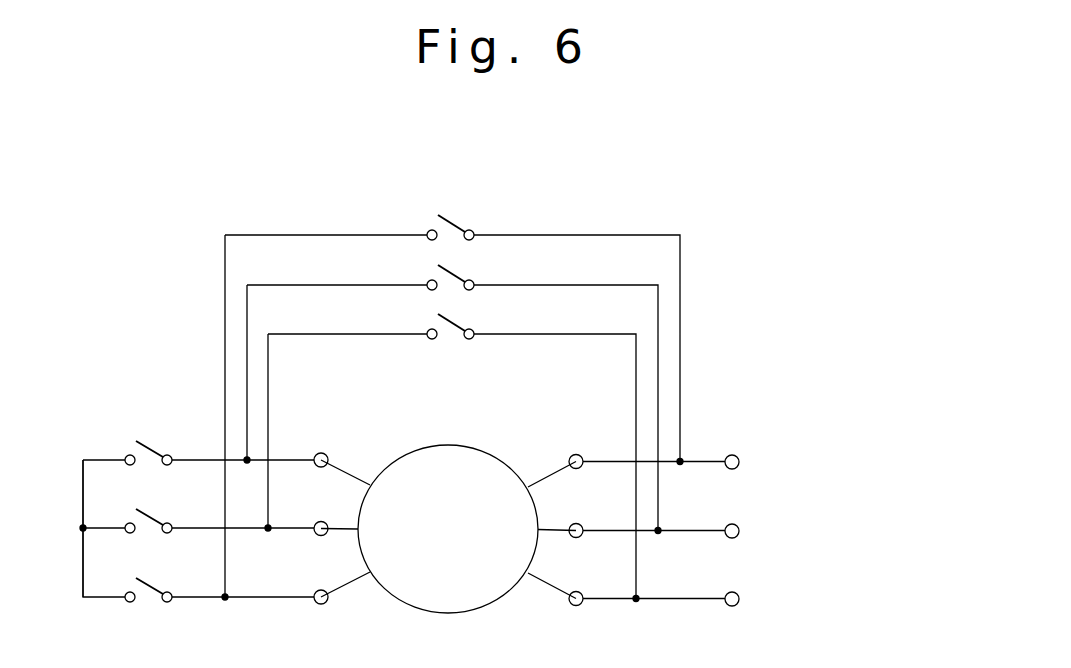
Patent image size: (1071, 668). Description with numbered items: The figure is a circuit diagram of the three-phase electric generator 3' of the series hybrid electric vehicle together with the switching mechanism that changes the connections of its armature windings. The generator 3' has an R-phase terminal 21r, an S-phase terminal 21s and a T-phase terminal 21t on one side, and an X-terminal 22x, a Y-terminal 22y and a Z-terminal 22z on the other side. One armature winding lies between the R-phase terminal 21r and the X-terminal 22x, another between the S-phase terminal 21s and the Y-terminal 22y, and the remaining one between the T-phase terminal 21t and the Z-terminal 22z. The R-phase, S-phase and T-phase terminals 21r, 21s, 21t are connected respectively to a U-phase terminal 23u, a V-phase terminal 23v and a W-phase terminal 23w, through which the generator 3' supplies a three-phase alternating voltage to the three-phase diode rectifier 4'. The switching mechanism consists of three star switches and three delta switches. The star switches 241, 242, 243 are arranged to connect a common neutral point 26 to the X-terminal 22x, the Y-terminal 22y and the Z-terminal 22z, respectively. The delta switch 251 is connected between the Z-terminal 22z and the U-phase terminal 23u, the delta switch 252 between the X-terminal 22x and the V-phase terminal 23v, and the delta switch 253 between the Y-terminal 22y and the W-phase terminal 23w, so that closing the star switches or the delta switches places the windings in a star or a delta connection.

The delta switch 251 is at (457, 223).
The delta switch 252 is at (457, 273).
The delta switch 253 is at (457, 322).
The star switch 241 is at (155, 447).
The star switch 242 is at (155, 515).
The star switch 243 is at (155, 584).
The neutral point 26 is at (85, 531).
The X-terminal 22x is at (319, 452).
The Y-terminal 22y is at (319, 521).
The Z-terminal 22z is at (319, 589).
The R-phase terminal 21r is at (579, 454).
The S-phase terminal 21s is at (579, 523).
The T-phase terminal 21t is at (579, 591).
The U-phase terminal 23u is at (735, 455).
The V-phase terminal 23v is at (735, 524).
The W-phase terminal 23w is at (735, 592).
The three-phase electric generator 3' is at (474, 483).
The three-phase diode rectifier 4' is at (862, 520).